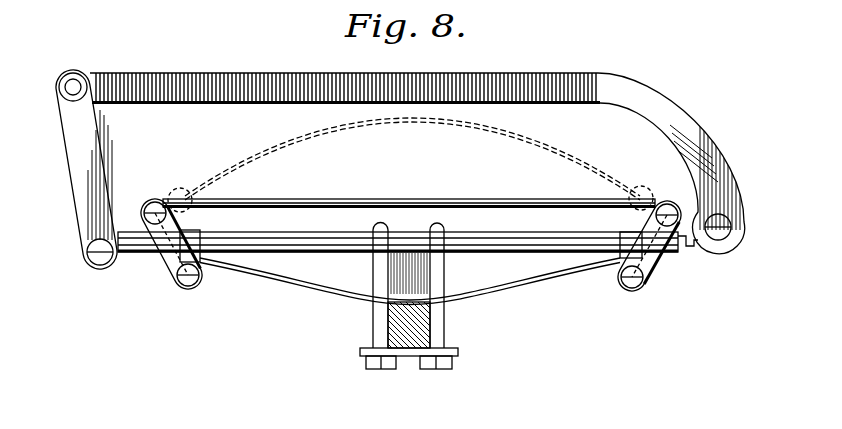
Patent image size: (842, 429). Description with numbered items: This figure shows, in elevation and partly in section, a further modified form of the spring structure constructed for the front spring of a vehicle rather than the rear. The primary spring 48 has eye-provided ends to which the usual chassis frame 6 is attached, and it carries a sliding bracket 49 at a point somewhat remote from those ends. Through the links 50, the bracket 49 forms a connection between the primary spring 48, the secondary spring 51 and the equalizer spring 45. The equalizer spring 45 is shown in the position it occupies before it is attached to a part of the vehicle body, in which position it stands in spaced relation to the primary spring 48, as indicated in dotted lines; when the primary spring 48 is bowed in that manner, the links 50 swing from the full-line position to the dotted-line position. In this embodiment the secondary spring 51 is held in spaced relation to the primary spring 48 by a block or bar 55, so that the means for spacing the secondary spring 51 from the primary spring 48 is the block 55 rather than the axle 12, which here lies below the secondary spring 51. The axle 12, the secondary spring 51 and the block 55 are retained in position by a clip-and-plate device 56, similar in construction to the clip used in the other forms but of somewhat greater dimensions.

The chassis frame 6 is at (727, 168).
The axle 12 is at (432, 321).
The equalizer spring 45 is at (373, 199).
The primary spring 48 is at (570, 154).
The sliding bracket 49 is at (203, 239).
The links 50 is at (181, 189).
The secondary spring 51 is at (530, 295).
The block 55 is at (395, 273).
The clip-and-plate device 56 is at (409, 370).